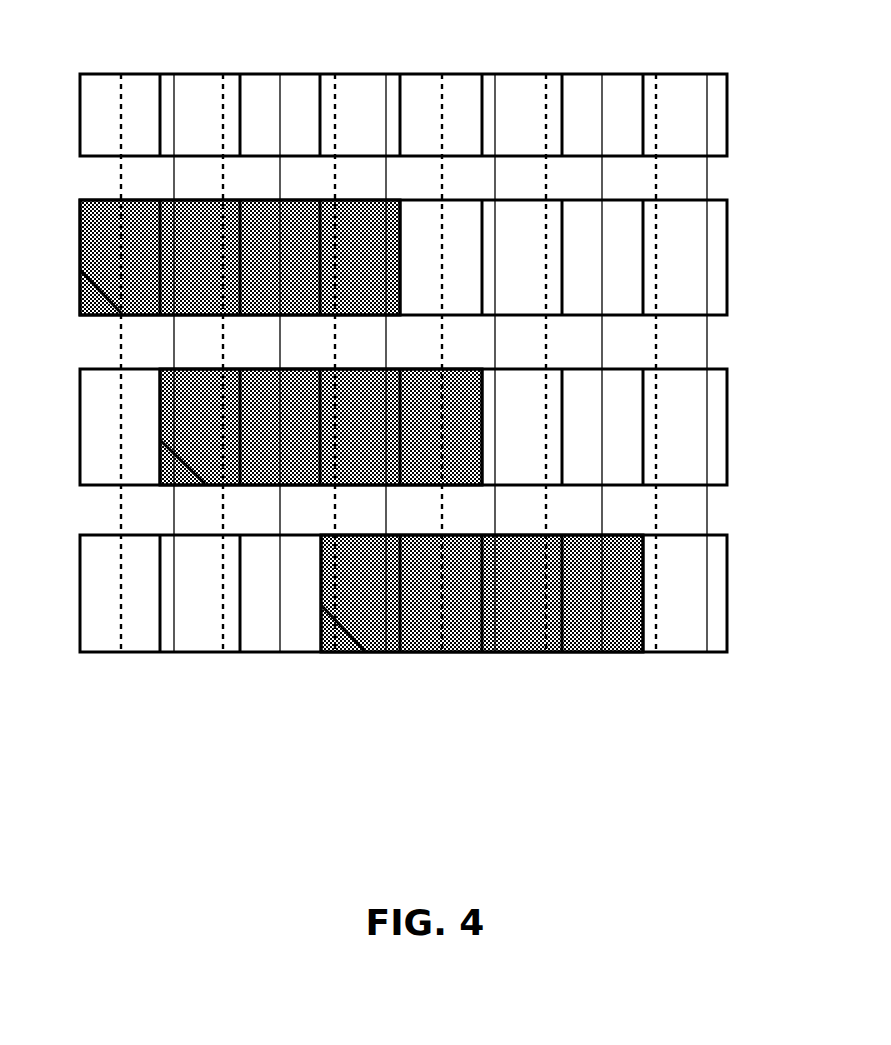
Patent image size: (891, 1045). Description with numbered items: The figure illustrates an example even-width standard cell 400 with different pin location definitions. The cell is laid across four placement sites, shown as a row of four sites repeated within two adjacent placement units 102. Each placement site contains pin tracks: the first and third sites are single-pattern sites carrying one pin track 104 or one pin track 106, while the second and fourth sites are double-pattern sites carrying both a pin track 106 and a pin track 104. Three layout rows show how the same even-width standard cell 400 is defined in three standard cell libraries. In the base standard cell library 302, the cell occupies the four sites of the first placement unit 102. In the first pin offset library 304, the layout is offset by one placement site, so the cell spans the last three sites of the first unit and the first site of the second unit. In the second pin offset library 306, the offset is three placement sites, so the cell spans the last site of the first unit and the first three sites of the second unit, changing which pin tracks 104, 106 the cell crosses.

The placement unit 102 is at (727, 670).
The pin track 104 is at (124, 97).
The pin track 106 is at (177, 97).
The base standard cell library 302 is at (754, 269).
The first pin offset library 304 is at (754, 429).
The second pin offset library 306 is at (754, 601).
The even-width standard cell 400 is at (327, 400).